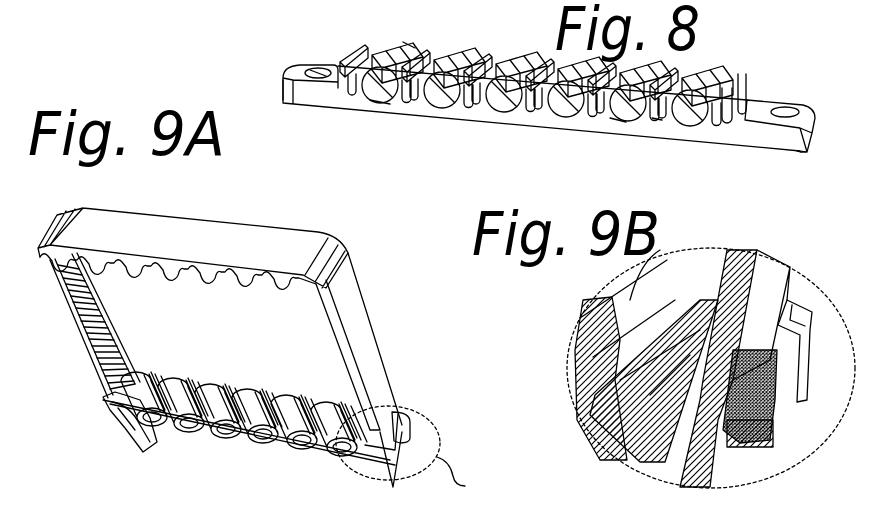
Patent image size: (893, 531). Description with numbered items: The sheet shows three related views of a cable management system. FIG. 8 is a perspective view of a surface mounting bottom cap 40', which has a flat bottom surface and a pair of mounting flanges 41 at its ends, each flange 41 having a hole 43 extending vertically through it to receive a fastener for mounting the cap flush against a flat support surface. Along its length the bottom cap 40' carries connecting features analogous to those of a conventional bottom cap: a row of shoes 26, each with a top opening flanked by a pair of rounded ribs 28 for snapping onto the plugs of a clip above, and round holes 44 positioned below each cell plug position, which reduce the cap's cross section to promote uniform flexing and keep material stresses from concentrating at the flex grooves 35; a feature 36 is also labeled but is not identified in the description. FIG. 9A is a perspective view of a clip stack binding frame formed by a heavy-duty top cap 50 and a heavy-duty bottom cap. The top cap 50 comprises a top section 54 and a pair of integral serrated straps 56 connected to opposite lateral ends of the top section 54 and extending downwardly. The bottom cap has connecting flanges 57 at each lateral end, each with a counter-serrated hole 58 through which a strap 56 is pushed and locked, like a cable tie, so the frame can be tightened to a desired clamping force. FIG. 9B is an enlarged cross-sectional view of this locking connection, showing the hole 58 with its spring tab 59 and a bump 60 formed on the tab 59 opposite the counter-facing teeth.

In FIG. 8, the shoe 26 is at (620, 118).
In FIG. 8, the rounded rib 28 is at (432, 57).
In FIG. 8, the flex groove 35 is at (657, 118).
In FIG. 8, the clip lever 36 is at (405, 43).
In FIG. 8, the bottom cap 40' is at (574, 97).
In FIG. 8, the mounting flange 41 is at (283, 90).
In FIG. 8, the hole 43 is at (318, 70).
In FIG. 8, the round hole 44 is at (378, 100).
In FIG. 9A, the heavy-duty top cap 50 is at (299, 337).
In FIG. 9A, the top section 54 is at (97, 225).
In FIG. 9A, the serrated strap 56 is at (377, 355).
In FIG. 9A, the connecting flange 57 is at (398, 414).
In FIG. 9A, the counter-serrated hole 58 is at (417, 427).
In FIG. 9B, the counter-serrated hole 58 is at (790, 278).
In FIG. 9A, the spring tab 59 is at (417, 442).
In FIG. 9B, the spring tab 59 is at (787, 374).
In FIG. 9B, the bump 60 is at (773, 393).